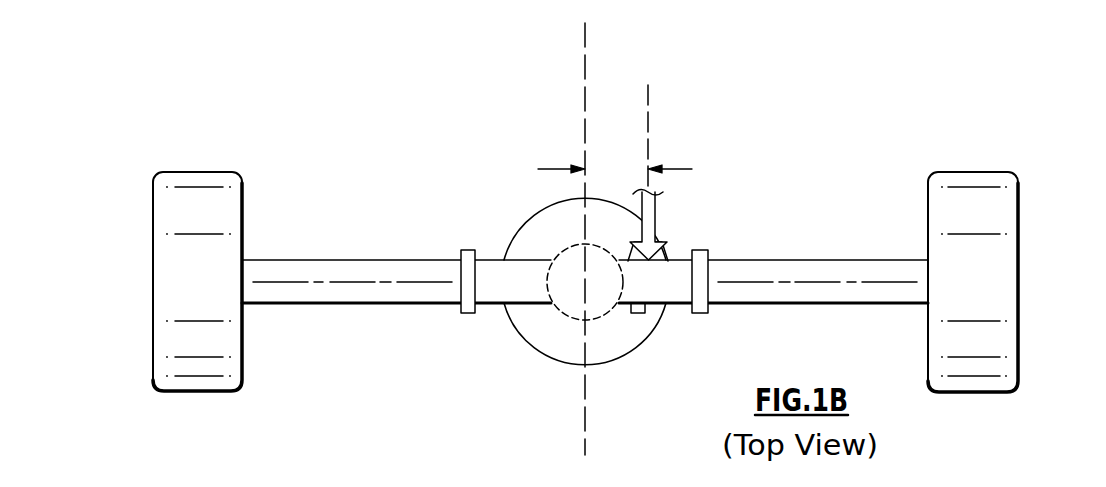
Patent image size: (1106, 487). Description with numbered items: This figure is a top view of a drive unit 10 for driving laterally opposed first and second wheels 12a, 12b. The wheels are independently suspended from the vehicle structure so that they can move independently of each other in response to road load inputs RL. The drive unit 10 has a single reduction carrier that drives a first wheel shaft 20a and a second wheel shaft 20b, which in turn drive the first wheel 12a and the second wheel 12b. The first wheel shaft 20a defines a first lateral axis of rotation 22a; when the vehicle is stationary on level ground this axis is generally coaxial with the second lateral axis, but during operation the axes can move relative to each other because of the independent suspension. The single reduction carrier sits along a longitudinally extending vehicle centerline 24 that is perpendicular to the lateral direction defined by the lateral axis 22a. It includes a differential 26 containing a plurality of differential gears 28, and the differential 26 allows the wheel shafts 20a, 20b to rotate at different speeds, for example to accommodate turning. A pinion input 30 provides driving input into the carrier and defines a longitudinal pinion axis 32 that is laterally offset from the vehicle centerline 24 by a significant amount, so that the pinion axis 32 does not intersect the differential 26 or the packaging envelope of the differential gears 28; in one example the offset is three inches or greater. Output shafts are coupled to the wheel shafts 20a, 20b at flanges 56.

The drive unit 10 is at (590, 239).
The first wheel 12a is at (170, 350).
The second wheel 12b is at (1003, 343).
The first wheel shaft 20a is at (322, 296).
The second wheel shaft 20b is at (797, 290).
The first lateral axis of rotation 22a is at (345, 282).
The vehicle centerline 24 is at (586, 48).
The differential 26 is at (556, 256).
The differential gears 28 is at (615, 297).
The pinion input 30 is at (661, 216).
The longitudinal pinion axis 32 is at (649, 124).
The flanges 56 is at (467, 313).
The road load inputs RL is at (197, 282).